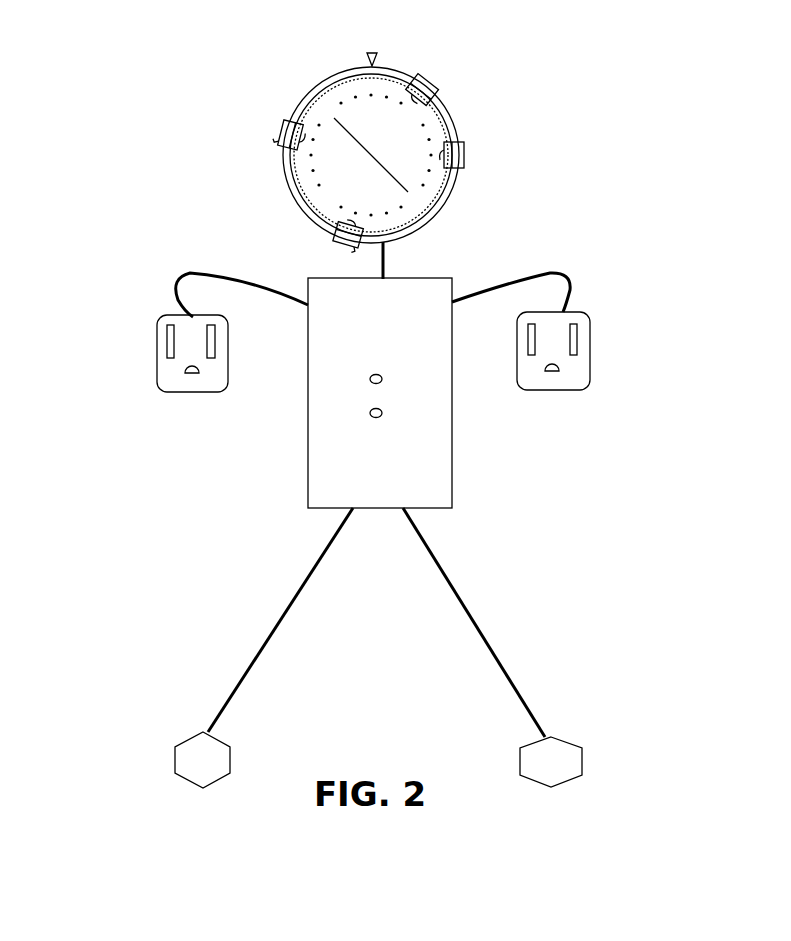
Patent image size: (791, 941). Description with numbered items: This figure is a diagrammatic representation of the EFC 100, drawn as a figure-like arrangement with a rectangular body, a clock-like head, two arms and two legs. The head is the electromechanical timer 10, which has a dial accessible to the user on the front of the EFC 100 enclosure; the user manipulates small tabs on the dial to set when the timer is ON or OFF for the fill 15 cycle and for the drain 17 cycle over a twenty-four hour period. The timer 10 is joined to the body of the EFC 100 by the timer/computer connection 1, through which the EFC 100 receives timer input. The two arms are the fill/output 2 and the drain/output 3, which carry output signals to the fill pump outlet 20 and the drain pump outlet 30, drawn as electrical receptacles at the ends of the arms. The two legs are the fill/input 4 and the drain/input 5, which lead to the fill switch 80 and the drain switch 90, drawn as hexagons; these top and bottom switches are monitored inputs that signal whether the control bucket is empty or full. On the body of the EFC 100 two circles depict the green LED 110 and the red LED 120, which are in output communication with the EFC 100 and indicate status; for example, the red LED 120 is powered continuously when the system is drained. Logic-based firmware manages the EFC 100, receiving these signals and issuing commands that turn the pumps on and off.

The timer/computer connection 1 is at (393, 246).
The fill/output 2 is at (188, 272).
The drain/output 3 is at (496, 284).
The fill/input 4 is at (250, 670).
The drain/input 5 is at (503, 664).
The timer 10 is at (293, 103).
The fill cycle 15 is at (436, 96).
The drain cycle 17 is at (463, 150).
The fill pump outlet 20 is at (157, 350).
The drain pump outlet 30 is at (592, 345).
The fill switch 80 is at (202, 760).
The drain switch 90 is at (551, 762).
The EFC 100 is at (380, 393).
The green LED 110 is at (373, 362).
The red LED 120 is at (374, 429).